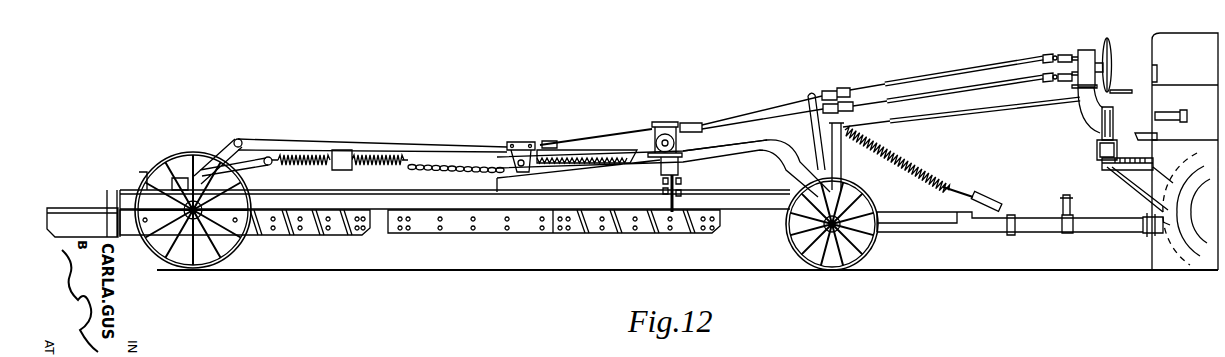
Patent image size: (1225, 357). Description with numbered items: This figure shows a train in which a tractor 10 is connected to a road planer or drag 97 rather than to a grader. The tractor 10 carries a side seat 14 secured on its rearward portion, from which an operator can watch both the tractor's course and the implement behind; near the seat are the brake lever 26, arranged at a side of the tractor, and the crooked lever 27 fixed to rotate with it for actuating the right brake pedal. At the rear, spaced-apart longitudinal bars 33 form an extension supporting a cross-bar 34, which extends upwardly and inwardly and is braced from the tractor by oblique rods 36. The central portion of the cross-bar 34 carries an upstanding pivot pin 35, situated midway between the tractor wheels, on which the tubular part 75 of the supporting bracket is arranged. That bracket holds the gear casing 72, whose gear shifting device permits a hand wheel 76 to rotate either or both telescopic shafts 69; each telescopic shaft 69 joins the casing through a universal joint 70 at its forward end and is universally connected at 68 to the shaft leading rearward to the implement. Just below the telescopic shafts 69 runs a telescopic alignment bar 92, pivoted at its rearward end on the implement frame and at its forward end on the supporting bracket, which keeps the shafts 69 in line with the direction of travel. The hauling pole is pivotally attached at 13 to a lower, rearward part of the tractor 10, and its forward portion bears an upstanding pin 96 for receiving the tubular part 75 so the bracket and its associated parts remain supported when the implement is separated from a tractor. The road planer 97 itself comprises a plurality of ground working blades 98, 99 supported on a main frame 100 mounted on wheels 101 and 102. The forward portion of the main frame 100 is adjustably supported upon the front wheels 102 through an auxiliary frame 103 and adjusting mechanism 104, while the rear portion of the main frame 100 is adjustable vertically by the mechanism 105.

The tractor 10 is at (1172, 135).
The pivotal attachment 13 is at (1148, 236).
The side seat 14 is at (1170, 33).
The brake lever 26 is at (1185, 112).
The crooked lever 27 is at (1143, 134).
The longitudinal bars 33 is at (1133, 171).
The cross-bar 34 is at (1098, 153).
The upstanding pivot pin 35 is at (1114, 108).
The oblique rods 36 is at (1148, 198).
The universal connection 68 is at (836, 90).
The telescopic shaft 69 is at (960, 89).
The universal joint 70 is at (1056, 78).
The gear casing 72 is at (1085, 50).
The tubular part 75 is at (1103, 125).
The hand wheel 76 is at (1112, 45).
The telescopic alignment bar 92 is at (990, 117).
The upstanding pin 96 is at (1063, 198).
The road planer or drag 97 is at (426, 130).
The ground working blade 98 is at (288, 235).
The ground working blade 99 is at (647, 237).
The main frame 100 is at (378, 196).
The wheel 101 is at (232, 260).
The front wheel 102 is at (872, 248).
The auxiliary frame 103 is at (766, 158).
The adjusting mechanism 104 is at (666, 122).
The adjusting mechanism 105 is at (182, 178).